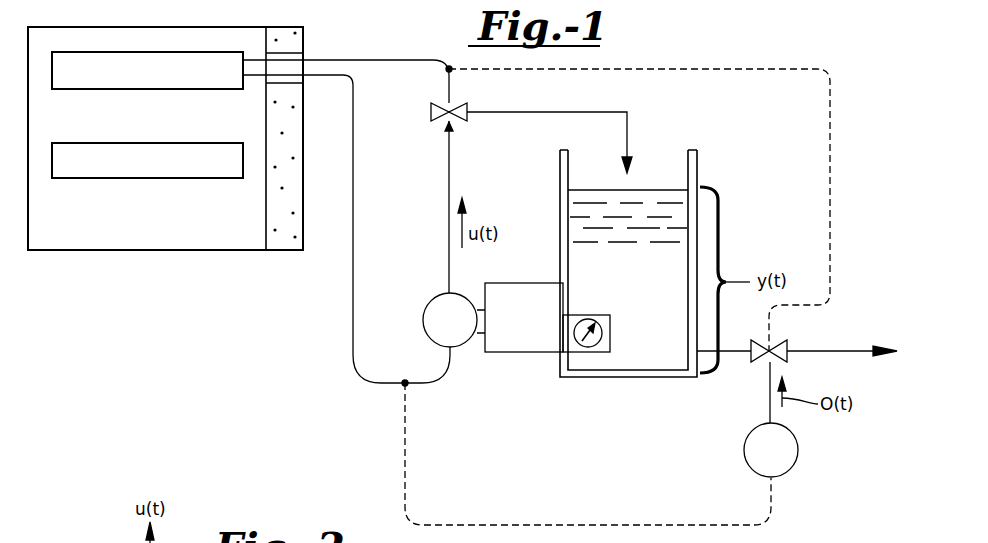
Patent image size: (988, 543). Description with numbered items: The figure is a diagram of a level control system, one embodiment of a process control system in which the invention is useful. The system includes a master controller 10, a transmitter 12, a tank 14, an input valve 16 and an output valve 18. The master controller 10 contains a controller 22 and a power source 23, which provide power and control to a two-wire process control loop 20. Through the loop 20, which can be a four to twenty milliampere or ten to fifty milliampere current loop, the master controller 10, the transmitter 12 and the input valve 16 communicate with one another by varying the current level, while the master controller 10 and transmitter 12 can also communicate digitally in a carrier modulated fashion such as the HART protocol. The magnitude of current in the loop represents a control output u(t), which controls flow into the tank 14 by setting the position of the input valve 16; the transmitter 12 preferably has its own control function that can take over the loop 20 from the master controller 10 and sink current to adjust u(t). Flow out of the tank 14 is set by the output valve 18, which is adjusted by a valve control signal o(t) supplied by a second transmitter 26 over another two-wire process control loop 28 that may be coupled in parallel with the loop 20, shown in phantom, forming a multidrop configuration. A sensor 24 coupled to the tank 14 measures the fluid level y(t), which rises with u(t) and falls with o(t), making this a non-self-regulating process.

The master controller 10 is at (100, 250).
The transmitter 12 is at (520, 353).
The tank 14 is at (593, 377).
The input valve 16 is at (460, 100).
The output valve 18 is at (787, 338).
The two-wire process control loop 20 is at (353, 297).
The controller 22 is at (193, 143).
The power source 23 is at (85, 89).
The sensor 24 is at (600, 315).
The transmitter 26 is at (750, 468).
The two-wire process control loop 28 is at (565, 525).